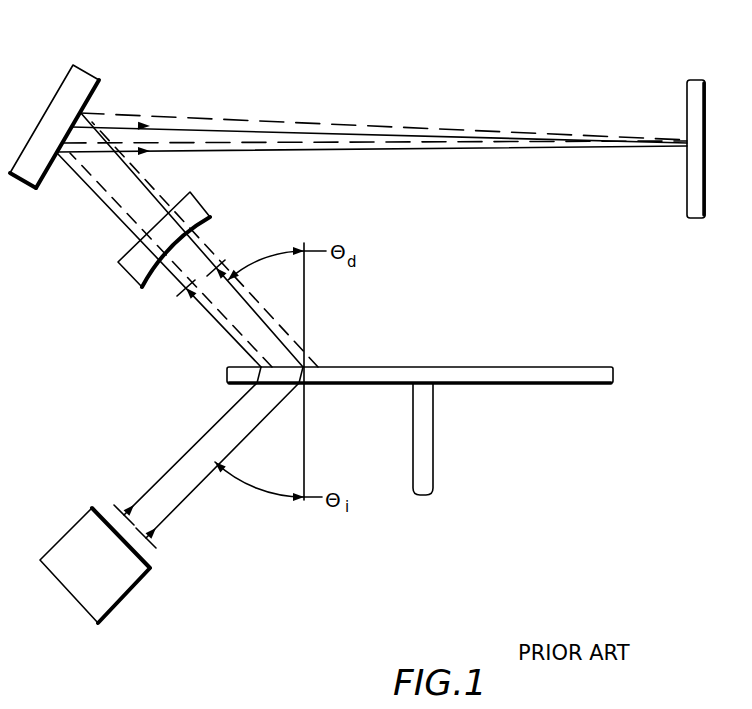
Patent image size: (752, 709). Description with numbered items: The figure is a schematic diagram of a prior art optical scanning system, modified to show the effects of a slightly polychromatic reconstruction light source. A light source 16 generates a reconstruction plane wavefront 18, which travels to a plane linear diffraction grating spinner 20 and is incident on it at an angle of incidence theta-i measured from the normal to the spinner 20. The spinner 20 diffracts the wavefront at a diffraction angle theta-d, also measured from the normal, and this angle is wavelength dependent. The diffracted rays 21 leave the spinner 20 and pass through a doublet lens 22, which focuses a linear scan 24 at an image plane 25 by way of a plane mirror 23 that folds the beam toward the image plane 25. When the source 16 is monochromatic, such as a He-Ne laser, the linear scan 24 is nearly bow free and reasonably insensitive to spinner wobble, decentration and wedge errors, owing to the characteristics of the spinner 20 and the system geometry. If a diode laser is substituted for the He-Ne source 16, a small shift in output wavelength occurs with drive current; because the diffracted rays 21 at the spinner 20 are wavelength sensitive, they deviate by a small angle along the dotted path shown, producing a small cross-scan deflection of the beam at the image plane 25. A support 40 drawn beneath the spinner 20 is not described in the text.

The light source 16 is at (127, 590).
The reconstruction plane wavefront 18 is at (133, 520).
The plane linear diffraction grating spinner 20 is at (558, 377).
The diffracted rays 21 is at (218, 322).
The doublet lens 22 is at (207, 215).
The plane mirror 23 is at (83, 78).
The linear scan 24 is at (636, 150).
The image plane 25 is at (689, 103).
The grating support 40 is at (430, 488).